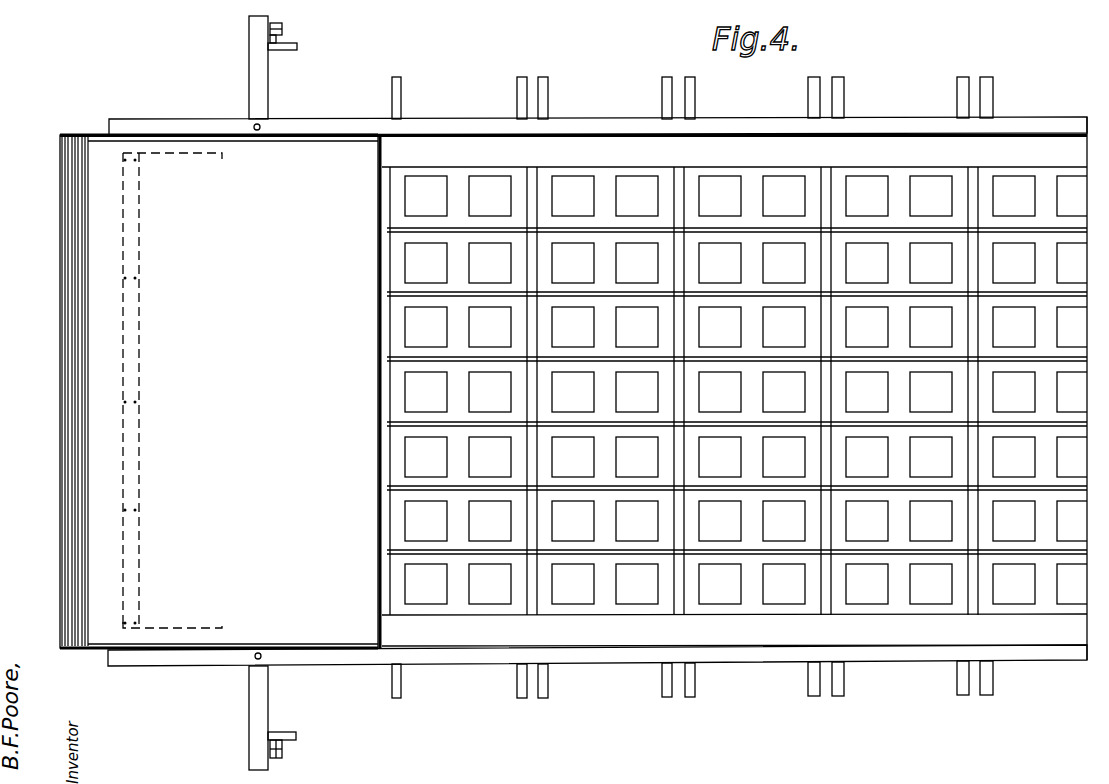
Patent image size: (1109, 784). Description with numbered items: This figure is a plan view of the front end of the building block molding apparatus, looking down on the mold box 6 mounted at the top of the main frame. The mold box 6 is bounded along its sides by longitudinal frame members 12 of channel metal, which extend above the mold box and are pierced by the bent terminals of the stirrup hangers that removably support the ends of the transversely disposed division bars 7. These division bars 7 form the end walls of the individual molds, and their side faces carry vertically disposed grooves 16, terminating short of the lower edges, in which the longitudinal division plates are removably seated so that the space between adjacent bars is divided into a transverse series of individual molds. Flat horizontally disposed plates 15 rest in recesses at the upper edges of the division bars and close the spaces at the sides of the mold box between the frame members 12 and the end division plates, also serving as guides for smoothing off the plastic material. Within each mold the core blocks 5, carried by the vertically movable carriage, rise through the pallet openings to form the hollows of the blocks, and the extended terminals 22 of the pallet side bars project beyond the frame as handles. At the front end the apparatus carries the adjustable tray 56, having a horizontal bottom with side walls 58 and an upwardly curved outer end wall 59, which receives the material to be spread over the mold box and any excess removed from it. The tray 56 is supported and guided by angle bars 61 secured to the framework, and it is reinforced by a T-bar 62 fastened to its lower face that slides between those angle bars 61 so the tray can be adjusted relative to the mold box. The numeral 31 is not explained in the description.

The core blocks 5 is at (605, 457).
The mold box 6 is at (580, 232).
The division bars 7 is at (976, 173).
The longitudinal frame members 12 is at (888, 119).
The horizontally disposed plates 15 is at (591, 146).
The vertically disposed grooves 16 is at (392, 295).
The extended terminals 22 is at (985, 77).
The transverse partition 31 is at (397, 402).
The adjustable tray 56 is at (219, 391).
The side walls 58 is at (162, 134).
The upwardly curved outer end walls 59 is at (72, 295).
The angle bars 61 is at (196, 153).
The T-bar 62 is at (134, 426).